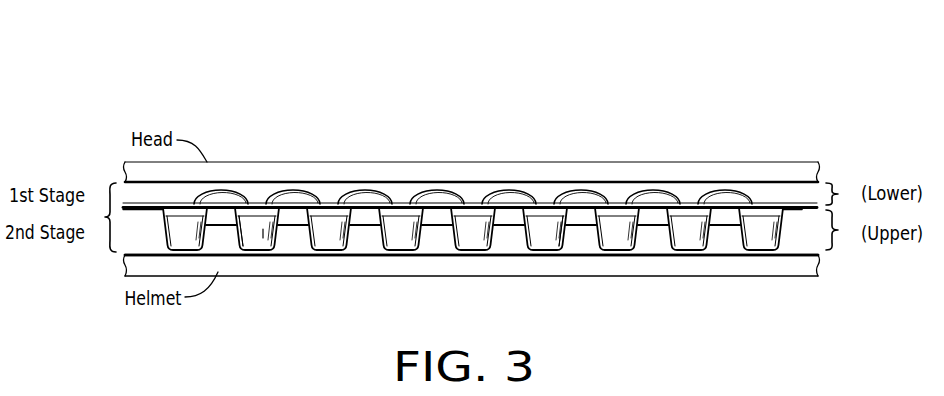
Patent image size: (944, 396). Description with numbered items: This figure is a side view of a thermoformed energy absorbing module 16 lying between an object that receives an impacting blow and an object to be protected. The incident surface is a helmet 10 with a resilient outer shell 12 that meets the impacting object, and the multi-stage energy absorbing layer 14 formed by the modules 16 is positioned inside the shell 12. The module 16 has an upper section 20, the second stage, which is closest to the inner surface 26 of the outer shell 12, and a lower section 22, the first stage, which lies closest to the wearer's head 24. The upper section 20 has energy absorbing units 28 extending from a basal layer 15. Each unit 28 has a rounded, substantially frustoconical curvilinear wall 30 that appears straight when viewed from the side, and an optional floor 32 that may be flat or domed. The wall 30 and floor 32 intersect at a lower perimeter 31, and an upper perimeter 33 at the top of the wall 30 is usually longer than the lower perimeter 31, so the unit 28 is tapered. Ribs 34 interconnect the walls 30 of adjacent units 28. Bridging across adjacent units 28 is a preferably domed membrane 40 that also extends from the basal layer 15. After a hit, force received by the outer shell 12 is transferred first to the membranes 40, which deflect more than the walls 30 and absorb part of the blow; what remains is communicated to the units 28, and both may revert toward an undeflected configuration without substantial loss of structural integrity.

The helmet 10 is at (240, 270).
The resilient outer shell 12 is at (240, 270).
The multi-stage energy absorbing layer 14 is at (105, 216).
The basal layer 15 is at (800, 212).
The energy absorbing module 16 is at (438, 221).
The upper section 20 is at (508, 266).
The lower section 22 is at (544, 163).
The head 24 is at (552, 165).
The inner surface 26 is at (358, 250).
The energy absorbing unit 28 is at (263, 233).
The curvilinear wall 30 is at (556, 230).
The lower perimeter 31 is at (626, 253).
The floor 32 is at (338, 253).
The upper perimeter 33 is at (707, 227).
The rib 34 is at (222, 225).
The membrane 40 is at (660, 190).